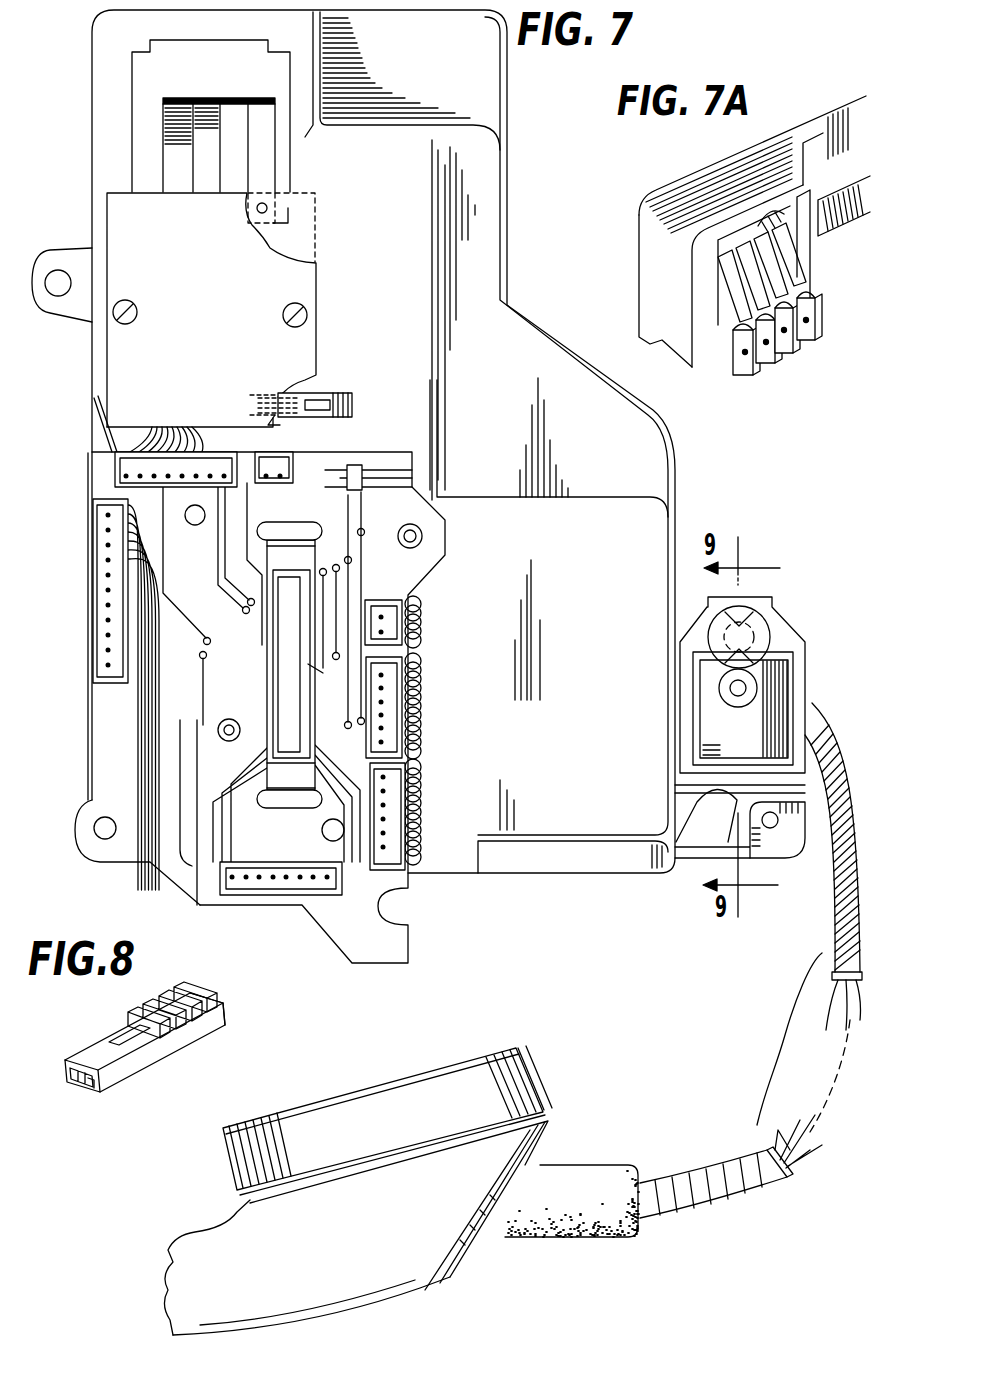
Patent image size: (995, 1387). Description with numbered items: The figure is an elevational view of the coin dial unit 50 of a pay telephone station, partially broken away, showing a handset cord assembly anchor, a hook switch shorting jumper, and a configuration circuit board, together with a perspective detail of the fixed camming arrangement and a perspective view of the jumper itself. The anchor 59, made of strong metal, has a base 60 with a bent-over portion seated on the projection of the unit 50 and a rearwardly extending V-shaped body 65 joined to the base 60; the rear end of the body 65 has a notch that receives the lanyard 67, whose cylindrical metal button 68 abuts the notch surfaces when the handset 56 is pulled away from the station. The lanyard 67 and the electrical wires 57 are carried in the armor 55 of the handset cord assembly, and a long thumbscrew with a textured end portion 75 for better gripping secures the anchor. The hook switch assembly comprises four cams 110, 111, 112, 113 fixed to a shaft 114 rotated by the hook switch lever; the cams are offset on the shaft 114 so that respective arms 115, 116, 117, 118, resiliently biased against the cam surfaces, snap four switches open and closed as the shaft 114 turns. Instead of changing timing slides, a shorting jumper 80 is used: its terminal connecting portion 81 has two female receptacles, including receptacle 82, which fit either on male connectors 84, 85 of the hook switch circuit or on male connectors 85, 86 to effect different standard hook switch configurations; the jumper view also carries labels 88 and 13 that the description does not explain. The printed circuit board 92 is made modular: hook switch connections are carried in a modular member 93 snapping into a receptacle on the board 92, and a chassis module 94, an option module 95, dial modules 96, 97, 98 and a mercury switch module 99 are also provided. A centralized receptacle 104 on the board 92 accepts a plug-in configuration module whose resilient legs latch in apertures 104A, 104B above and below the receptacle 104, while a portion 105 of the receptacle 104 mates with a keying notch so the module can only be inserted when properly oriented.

In FIG. 7, the coin dial unit 50 is at (511, 252).
In FIG. 7, the cam 110 is at (168, 98).
In FIG. 7A, the cam 110 is at (722, 285).
In FIG. 7, the cam 111 is at (207, 98).
In FIG. 7A, the cam 111 is at (748, 304).
In FIG. 7, the cam 112 is at (237, 98).
In FIG. 7A, the cam 112 is at (776, 286).
In FIG. 7, the cam 113 is at (272, 82).
In FIG. 7A, the cam 113 is at (792, 264).
In FIG. 7A, the shaft 114 is at (766, 222).
In FIG. 7A, the switch actuator arm 115 is at (742, 374).
In FIG. 7A, the switch actuator arm 116 is at (766, 364).
In FIG. 7A, the switch actuator arm 117 is at (787, 355).
In FIG. 7, the switch actuator arm 118 is at (288, 207).
In FIG. 7A, the switch actuator arm 118 is at (810, 340).
In FIG. 7, the male connector 84 is at (258, 396).
In FIG. 7, the male connector 85 is at (250, 408).
In FIG. 7, the shorting jumper 80 is at (354, 403).
In FIG. 8, the shorting jumper 80 is at (228, 1008).
In FIG. 7, the male connector 86 is at (278, 418).
In FIG. 7, the mercury switch module 99 is at (292, 462).
In FIG. 7, the modular member 93 is at (116, 471).
In FIG. 7, the chassis module 94 is at (97, 640).
In FIG. 7, the printed circuit board 92 is at (432, 556).
In FIG. 7, the dial module 96 is at (398, 622).
In FIG. 7, the dial module 97 is at (400, 712).
In FIG. 7, the dial module 98 is at (404, 806).
In FIG. 7, the option module 95 is at (270, 884).
In FIG. 7, the centralized receptacle 104 is at (268, 665).
In FIG. 7, the aperture 104A is at (298, 802).
In FIG. 7, the aperture 104B is at (282, 530).
In FIG. 7, the keying portion 105 is at (310, 666).
In FIG. 7, the anchor base 60 is at (704, 628).
In FIG. 7, the textured end portion 75 is at (770, 632).
In FIG. 7, the anchor 59 is at (789, 668).
In FIG. 7, the metal button 68 is at (735, 708).
In FIG. 7, the V-shaped body 65 is at (798, 718).
In FIG. 7, the electrical wires 57 is at (778, 848).
In FIG. 7, the lanyard 67 is at (820, 1126).
In FIG. 7, the armor 55 is at (722, 1197).
In FIG. 7, the handset 56 is at (378, 1285).
In FIG. 8, the terminals 88 is at (168, 1005).
In FIG. 8, the terminal connecting portion 81 is at (90, 1053).
In FIG. 8, the female receptacle 82 is at (72, 1082).
In FIG. 8, the cable 13 is at (95, 1090).